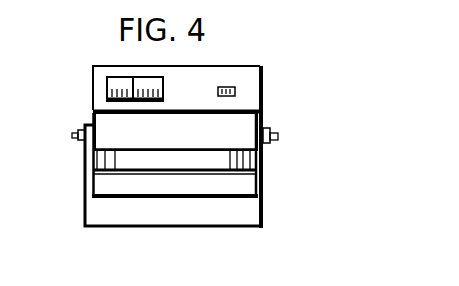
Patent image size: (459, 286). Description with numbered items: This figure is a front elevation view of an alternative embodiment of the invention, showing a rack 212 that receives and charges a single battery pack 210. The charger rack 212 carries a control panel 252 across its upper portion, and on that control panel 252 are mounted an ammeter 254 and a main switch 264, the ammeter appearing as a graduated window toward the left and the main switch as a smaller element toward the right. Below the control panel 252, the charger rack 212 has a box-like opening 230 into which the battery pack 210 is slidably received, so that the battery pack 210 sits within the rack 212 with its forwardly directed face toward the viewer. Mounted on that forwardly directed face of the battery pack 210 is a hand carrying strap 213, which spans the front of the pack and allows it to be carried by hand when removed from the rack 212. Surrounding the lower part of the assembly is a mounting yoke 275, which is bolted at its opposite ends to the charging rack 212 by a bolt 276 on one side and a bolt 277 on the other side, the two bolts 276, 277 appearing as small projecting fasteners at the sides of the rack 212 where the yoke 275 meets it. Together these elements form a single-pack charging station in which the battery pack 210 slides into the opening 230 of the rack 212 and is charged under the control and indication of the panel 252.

The battery pack 210 is at (230, 132).
The rack 212 is at (242, 100).
The hand carrying strap 213 is at (255, 171).
The box-like opening 230 is at (218, 184).
The control panel 252 is at (178, 131).
The ammeter 254 is at (108, 88).
The main switch 264 is at (232, 89).
The mounting yoke 275 is at (185, 196).
The bolt 276 is at (71, 132).
The bolt 277 is at (273, 135).